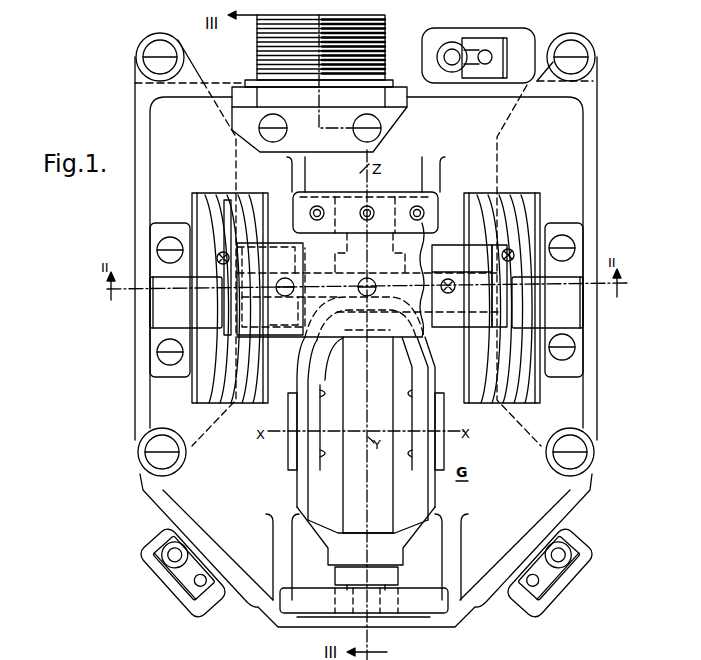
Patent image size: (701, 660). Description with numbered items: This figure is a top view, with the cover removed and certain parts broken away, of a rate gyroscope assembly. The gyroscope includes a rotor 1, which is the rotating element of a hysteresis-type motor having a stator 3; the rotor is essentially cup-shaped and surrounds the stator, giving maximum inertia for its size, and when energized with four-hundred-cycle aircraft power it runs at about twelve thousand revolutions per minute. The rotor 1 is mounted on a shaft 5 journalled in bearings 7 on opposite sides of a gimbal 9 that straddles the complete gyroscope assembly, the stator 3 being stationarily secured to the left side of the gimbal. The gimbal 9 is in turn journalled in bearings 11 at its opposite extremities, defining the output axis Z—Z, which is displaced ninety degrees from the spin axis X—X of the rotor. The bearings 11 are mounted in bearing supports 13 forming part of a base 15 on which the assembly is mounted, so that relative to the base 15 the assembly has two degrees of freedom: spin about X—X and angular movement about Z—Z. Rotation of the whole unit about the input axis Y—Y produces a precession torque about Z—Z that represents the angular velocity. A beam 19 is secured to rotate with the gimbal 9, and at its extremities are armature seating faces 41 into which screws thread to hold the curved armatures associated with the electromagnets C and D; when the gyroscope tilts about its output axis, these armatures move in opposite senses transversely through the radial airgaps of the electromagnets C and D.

The rotor 1 is at (355, 490).
The stator 3 is at (328, 372).
The shaft 5 is at (418, 445).
The bearings 7 is at (297, 448).
The gimbal 9 is at (432, 503).
The bearings 11 is at (386, 254).
The bearing supports 13 is at (438, 612).
The base 15 is at (552, 497).
The beam 19 is at (331, 277).
The armature seating faces 41 is at (248, 258).
The electromagnet C is at (487, 399).
The electromagnet D is at (222, 403).